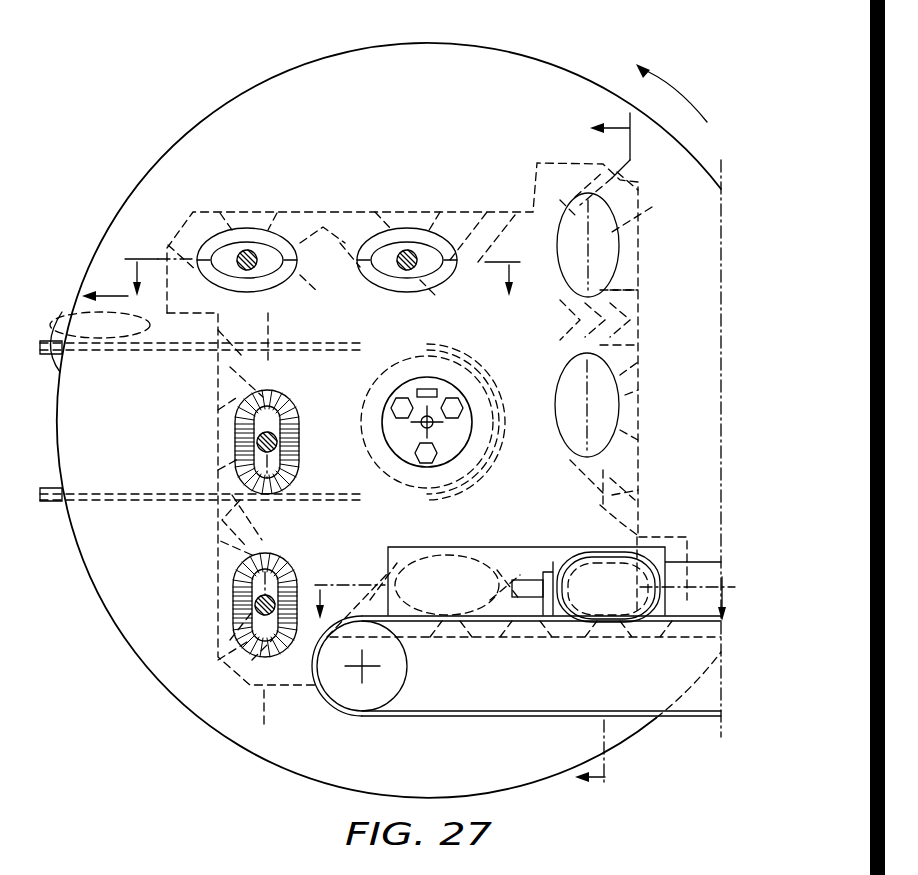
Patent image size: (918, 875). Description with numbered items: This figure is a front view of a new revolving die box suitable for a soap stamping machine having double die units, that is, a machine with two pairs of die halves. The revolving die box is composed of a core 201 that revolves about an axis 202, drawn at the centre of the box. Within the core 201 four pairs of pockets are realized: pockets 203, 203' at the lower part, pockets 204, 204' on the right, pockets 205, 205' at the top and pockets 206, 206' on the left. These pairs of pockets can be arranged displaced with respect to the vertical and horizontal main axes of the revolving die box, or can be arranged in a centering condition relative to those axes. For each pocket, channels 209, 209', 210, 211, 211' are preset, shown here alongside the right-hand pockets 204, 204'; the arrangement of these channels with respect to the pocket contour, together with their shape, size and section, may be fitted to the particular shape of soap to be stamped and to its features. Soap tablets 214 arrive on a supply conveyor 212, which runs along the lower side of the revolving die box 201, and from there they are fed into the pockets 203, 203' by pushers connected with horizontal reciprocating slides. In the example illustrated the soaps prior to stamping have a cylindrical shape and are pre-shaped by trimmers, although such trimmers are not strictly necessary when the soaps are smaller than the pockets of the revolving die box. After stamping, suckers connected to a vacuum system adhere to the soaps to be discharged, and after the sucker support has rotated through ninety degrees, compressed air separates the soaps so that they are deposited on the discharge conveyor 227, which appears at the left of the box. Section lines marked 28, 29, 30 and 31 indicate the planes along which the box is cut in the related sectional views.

The core 201 is at (528, 290).
The axis 202 is at (422, 425).
The pocket 203 is at (457, 567).
The pocket 203' is at (608, 569).
The pocket 204 is at (620, 405).
The pocket 204' is at (624, 245).
The pocket 205 is at (407, 238).
The pocket 205' is at (247, 237).
The pocket 206 is at (238, 442).
The pocket 206' is at (232, 605).
The channel 209 is at (626, 498).
The channel 209' is at (654, 400).
The channel 210 is at (640, 342).
The channel 211 is at (601, 172).
The channel 211' is at (654, 206).
The supply conveyor 212 is at (452, 716).
The soap tablet 214 is at (632, 578).
The discharge conveyor 227 is at (61, 356).
The section line 28 is at (534, 591).
The section line 29 is at (603, 458).
The section line 30 is at (322, 264).
The section line 31 is at (269, 521).